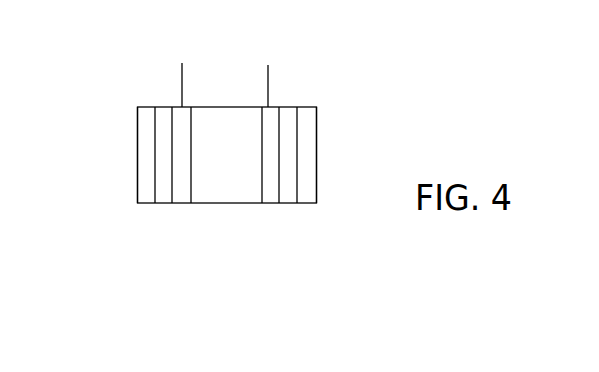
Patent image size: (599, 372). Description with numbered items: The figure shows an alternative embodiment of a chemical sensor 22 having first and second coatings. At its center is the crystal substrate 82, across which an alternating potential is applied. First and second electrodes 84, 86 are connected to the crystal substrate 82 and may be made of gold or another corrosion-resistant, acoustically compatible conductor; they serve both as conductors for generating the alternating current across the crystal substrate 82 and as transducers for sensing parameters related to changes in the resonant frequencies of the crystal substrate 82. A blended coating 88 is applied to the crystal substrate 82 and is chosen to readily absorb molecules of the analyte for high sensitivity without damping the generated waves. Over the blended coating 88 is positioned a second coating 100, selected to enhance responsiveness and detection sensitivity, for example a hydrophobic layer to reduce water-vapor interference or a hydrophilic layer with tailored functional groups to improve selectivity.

The chemical sensor 22 is at (229, 240).
The crystal substrate 82 is at (220, 116).
The first electrode 84 is at (182, 203).
The second electrode 86 is at (268, 204).
The blended coating 88 is at (163, 113).
The second coating 100 is at (137, 138).